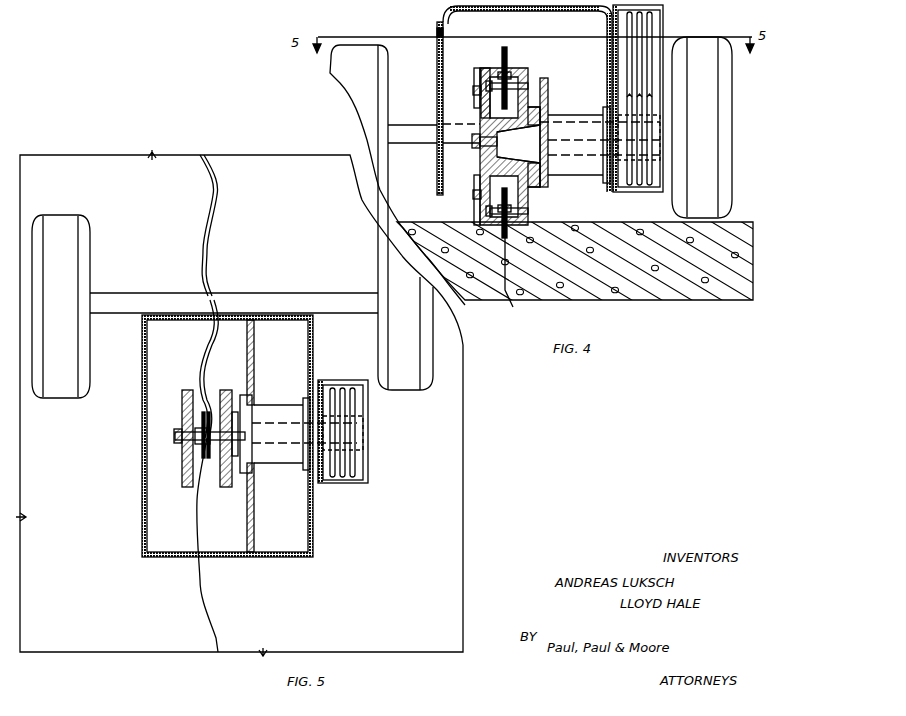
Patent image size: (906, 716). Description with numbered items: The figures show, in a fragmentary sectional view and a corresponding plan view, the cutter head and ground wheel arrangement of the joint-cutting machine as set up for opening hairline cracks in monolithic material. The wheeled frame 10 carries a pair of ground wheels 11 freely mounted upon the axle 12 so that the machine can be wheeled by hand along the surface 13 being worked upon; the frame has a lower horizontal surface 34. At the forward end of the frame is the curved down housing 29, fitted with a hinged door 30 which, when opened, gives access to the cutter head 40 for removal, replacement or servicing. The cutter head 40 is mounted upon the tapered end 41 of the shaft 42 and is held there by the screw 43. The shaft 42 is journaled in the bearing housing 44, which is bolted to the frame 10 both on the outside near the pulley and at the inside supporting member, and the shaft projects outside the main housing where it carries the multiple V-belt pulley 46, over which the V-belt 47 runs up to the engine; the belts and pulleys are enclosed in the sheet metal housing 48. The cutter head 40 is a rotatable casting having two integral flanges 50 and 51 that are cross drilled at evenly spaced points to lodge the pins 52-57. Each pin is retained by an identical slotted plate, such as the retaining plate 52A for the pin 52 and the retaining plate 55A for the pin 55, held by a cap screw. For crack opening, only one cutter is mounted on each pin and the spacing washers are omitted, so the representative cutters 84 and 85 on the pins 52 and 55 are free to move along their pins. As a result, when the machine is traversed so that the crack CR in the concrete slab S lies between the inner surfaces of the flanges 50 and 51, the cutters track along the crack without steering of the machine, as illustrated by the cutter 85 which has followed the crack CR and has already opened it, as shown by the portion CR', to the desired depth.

In FIG. 4, the wheeled frame 10 is at (507, 100).
In FIG. 5, the wheeled frame 10 is at (236, 452).
In FIG. 4, the ground wheels 11 is at (384, 68).
In FIG. 5, the ground wheels 11 is at (69, 218).
In FIG. 4, the axle 12 is at (403, 127).
In FIG. 5, the axle 12 is at (320, 290).
In FIG. 4, the surface 13 is at (610, 257).
In FIG. 5, the curved down housing 29 is at (167, 557).
In FIG. 4, the door 30 is at (438, 76).
In FIG. 5, the door 30 is at (142, 459).
In FIG. 4, the lower horizontal surface 34 is at (446, 195).
In FIG. 4, the cutter head 40 is at (476, 115).
In FIG. 5, the cutter head 40 is at (178, 408).
In FIG. 4, the tapered end 41 is at (548, 88).
In FIG. 4, the shaft 42 is at (530, 151).
In FIG. 4, the screw 43 is at (474, 146).
In FIG. 4, the bearing housing 44 is at (594, 114).
In FIG. 5, the bearing housing 44 is at (285, 405).
In FIG. 4, the multiple V-belt pulley 46 is at (646, 130).
In FIG. 5, the multiple V-belt pulley 46 is at (353, 418).
In FIG. 4, the V-belt 47 is at (630, 24).
In FIG. 5, the V-belt 47 is at (352, 478).
In FIG. 4, the sheet metal housing 48 is at (661, 96).
In FIG. 5, the sheet metal housing 48 is at (362, 447).
In FIG. 4, the flange 50 is at (546, 98).
In FIG. 5, the flange 50 is at (225, 390).
In FIG. 4, the flange 51 is at (482, 68).
In FIG. 5, the flange 51 is at (187, 390).
In FIG. 4, the pin 52 is at (526, 72).
In FIG. 4, the retaining plate 52A is at (478, 77).
In FIG. 5, the pins 52-57 is at (195, 437).
In FIG. 4, the pin 55 is at (522, 208).
In FIG. 4, the retaining plate 55A is at (478, 200).
In FIG. 4, the cutter 84 is at (506, 60).
In FIG. 4, the cutter 85 is at (510, 194).
In FIG. 5, the cutter 85 is at (207, 458).
In FIG. 4, the crack CR is at (512, 283).
In FIG. 5, the crack CR is at (226, 545).
In FIG. 5, the opened portion of crack CR' is at (230, 296).
In FIG. 4, the concrete slab S is at (662, 290).
In FIG. 5, the concrete slab S is at (380, 594).